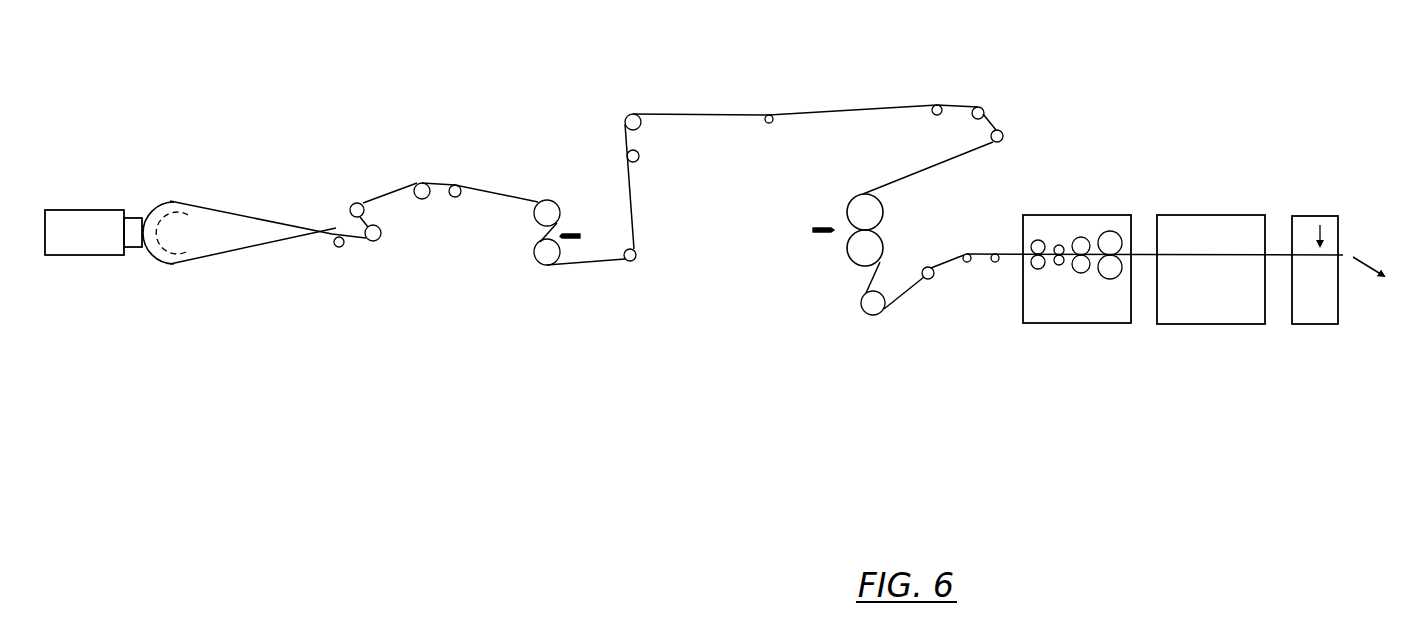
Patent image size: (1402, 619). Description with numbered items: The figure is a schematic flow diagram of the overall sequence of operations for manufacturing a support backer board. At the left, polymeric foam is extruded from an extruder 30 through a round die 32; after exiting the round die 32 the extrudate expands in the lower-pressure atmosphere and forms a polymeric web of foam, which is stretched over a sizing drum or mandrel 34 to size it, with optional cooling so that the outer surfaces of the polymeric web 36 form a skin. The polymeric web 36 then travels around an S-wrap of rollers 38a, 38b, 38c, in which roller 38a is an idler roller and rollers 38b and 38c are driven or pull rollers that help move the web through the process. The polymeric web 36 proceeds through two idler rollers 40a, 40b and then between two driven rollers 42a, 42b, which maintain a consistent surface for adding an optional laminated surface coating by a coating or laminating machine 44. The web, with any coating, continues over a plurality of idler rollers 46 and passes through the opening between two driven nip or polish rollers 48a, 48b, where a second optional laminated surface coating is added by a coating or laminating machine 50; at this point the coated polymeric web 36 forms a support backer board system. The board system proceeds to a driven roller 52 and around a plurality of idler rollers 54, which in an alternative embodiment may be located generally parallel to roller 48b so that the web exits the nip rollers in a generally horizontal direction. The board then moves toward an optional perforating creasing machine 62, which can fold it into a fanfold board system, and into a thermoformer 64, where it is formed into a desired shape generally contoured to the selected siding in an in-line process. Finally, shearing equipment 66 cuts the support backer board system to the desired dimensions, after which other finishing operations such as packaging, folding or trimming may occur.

The extruder 30 is at (60, 209).
The round die 32 is at (130, 217).
The sizing drum or mandrel 34 is at (175, 225).
The polymeric web 36 is at (383, 194).
The idler roller 38a is at (338, 238).
The driven or pull roller 38b is at (381, 231).
The driven or pull roller 38c is at (355, 203).
The idler roller 40a is at (420, 183).
The idler roller 40b is at (456, 185).
The driven roller 42a is at (545, 200).
The driven roller 42b is at (534, 253).
The coating or laminating machine 44 is at (575, 233).
The idler rollers 46 is at (637, 253).
The driven nip or polish roller 48a is at (883, 207).
The driven nip or polish roller 48b is at (883, 240).
The coating or laminating machine 50 is at (820, 227).
The driven roller 52 is at (872, 315).
The idler rollers 54 is at (995, 262).
The perforating creasing machine 62 is at (1100, 323).
The thermoformer 64 is at (1217, 324).
The shearing equipment 66 is at (1322, 324).